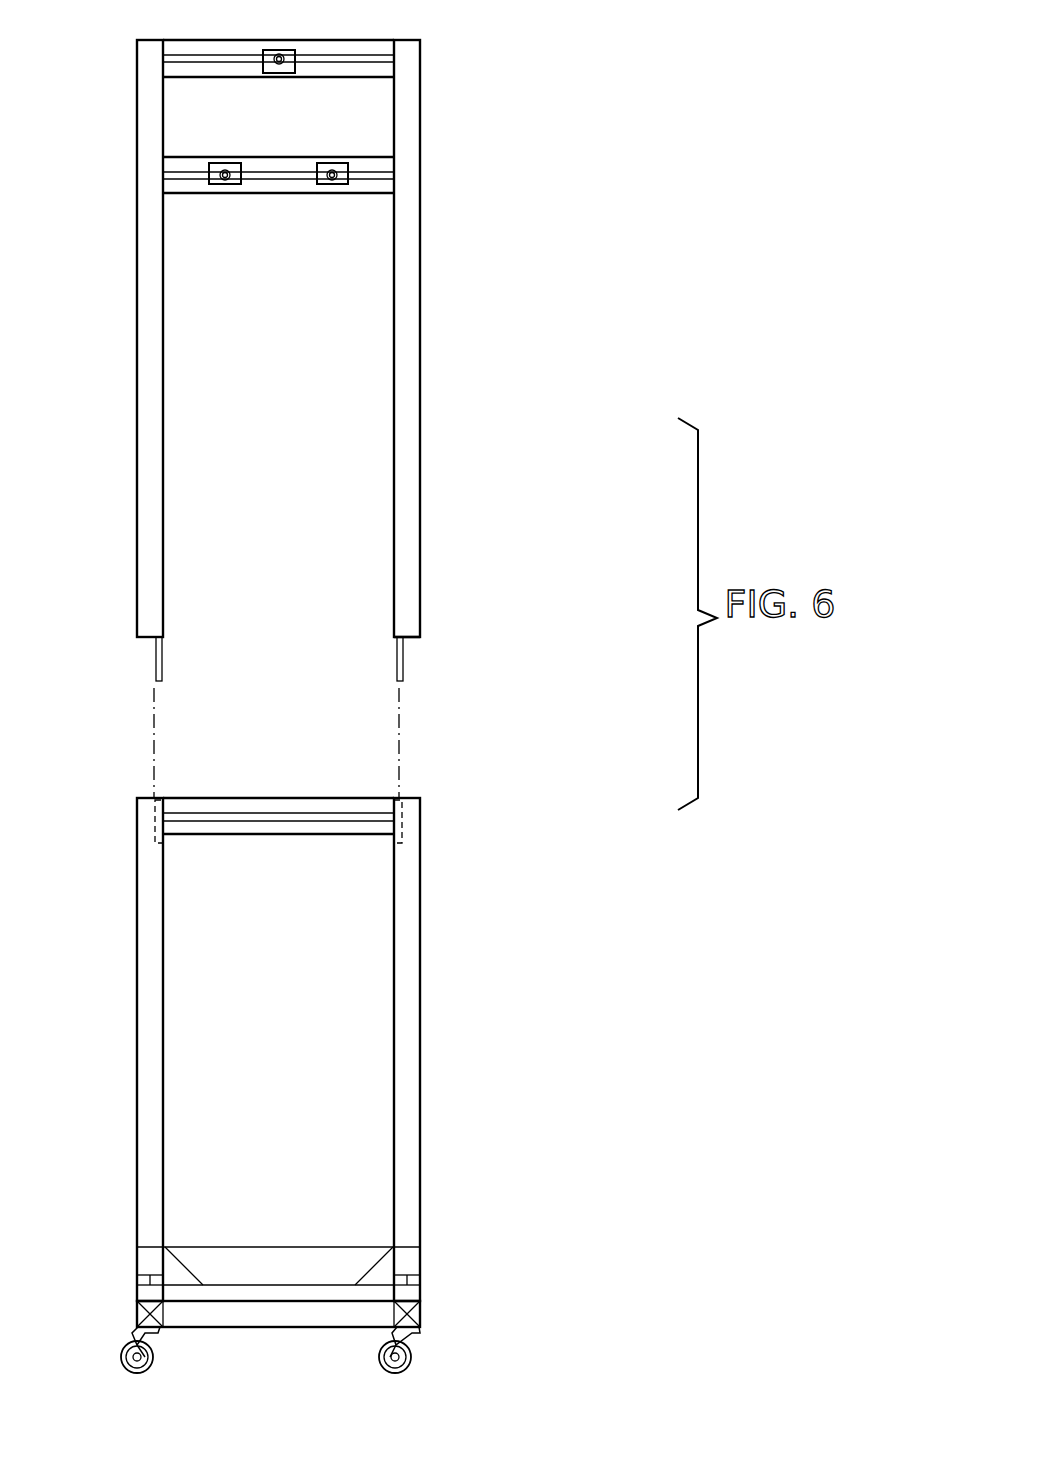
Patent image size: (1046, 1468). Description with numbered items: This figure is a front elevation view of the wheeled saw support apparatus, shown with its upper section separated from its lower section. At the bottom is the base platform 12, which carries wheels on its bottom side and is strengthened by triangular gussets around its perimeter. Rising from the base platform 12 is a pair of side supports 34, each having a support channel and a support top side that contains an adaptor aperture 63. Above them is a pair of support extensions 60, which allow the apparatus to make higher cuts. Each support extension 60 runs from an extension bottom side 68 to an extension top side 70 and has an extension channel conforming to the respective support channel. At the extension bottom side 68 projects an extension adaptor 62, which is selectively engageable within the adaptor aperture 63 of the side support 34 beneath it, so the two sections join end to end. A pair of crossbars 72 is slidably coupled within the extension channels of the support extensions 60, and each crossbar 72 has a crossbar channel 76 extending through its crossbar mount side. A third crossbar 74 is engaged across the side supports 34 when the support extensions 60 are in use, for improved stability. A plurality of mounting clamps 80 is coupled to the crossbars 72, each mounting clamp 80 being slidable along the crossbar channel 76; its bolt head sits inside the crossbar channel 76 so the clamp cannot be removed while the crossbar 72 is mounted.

The base platform 12 is at (277, 1318).
The side support 34 is at (405, 1010).
The support extension 60 is at (158, 524).
The extension adaptor 62 is at (397, 658).
The adaptor aperture 63 is at (397, 823).
The extension bottom side 68 is at (409, 638).
The extension top side 70 is at (408, 42).
The crossbar 72 is at (305, 68).
The third crossbar 74 is at (240, 800).
The crossbar channel 76 is at (360, 60).
The mounting clamp 80 is at (265, 55).